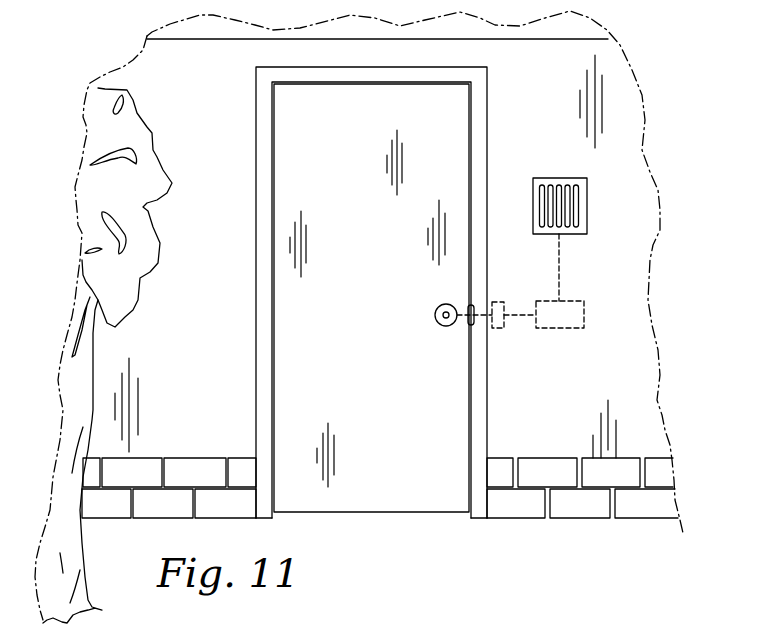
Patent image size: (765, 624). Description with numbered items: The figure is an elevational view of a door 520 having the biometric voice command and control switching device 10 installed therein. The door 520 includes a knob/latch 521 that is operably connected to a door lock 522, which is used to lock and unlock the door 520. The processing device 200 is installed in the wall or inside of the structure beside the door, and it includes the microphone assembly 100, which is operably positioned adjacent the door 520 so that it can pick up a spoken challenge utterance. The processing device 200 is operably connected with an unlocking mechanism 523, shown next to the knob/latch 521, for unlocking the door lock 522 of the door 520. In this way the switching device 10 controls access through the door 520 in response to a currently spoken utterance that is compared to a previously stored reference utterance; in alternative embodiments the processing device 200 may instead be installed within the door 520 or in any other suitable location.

The biometric voice command and control switching device 10 is at (627, 285).
The microphone assembly 100 is at (580, 215).
The processing device 200 is at (574, 328).
The door 520 is at (415, 490).
The knob/latch 521 is at (436, 307).
The door lock 522 is at (487, 318).
The unlocking mechanism 523 is at (500, 328).